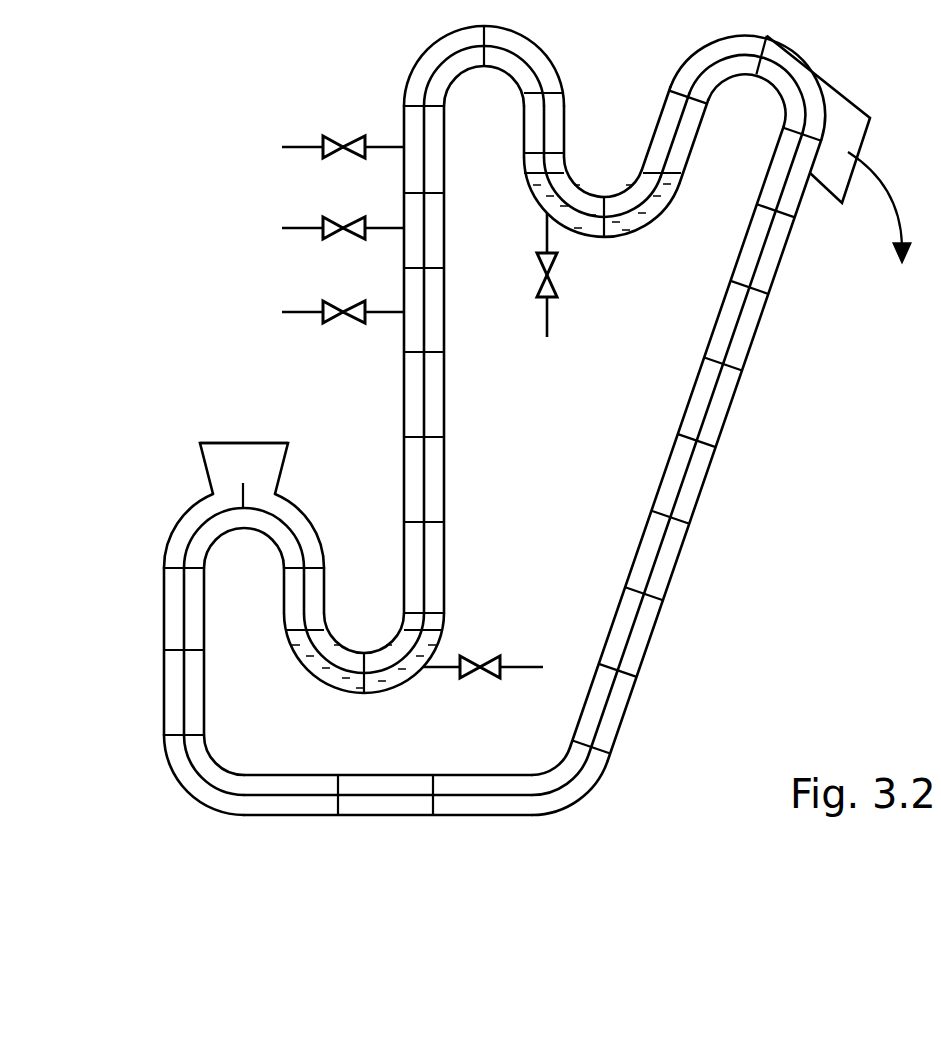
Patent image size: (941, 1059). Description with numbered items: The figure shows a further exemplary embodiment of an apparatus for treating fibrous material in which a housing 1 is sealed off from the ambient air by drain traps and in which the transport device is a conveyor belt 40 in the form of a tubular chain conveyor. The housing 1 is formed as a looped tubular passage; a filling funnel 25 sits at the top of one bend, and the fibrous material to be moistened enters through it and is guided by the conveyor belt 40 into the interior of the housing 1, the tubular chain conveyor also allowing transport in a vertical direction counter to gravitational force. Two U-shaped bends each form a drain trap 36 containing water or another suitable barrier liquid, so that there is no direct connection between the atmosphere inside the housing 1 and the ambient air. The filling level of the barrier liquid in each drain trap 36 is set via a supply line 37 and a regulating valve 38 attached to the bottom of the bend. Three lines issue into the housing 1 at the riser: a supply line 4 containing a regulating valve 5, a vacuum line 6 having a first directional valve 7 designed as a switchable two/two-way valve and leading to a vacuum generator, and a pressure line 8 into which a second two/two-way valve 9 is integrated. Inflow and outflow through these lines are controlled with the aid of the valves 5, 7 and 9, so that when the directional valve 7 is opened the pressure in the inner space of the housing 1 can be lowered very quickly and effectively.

The housing 1 is at (200, 455).
The filling funnel 25 is at (248, 443).
The supply line 4 is at (307, 310).
The regulating valve 5 is at (340, 307).
The vacuum line 6 is at (307, 227).
The first directional valve 7 is at (340, 223).
The pressure line 8 is at (293, 145).
The second 2/2-way valve 9 is at (340, 143).
The drain trap 36 is at (342, 673).
The supply line 37 is at (438, 672).
The regulating valve 38 is at (477, 653).
The conveyor belt 40 is at (683, 477).